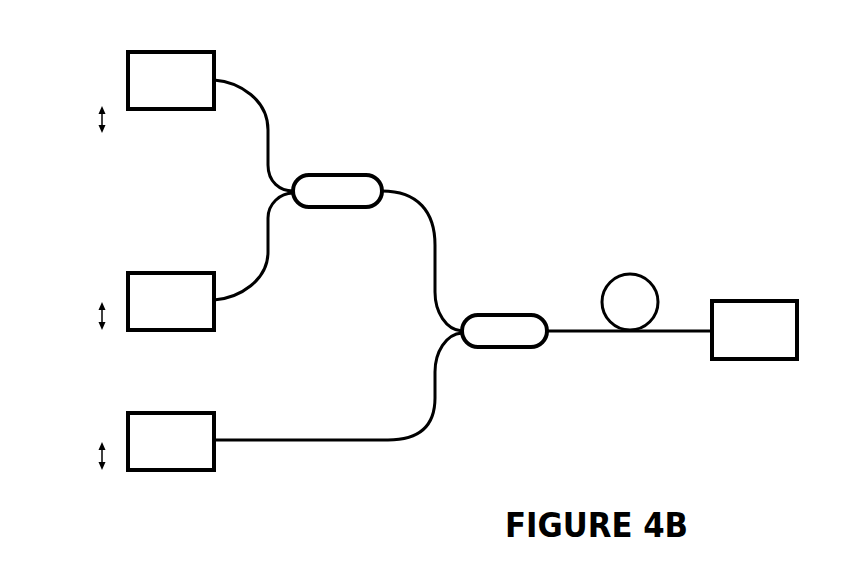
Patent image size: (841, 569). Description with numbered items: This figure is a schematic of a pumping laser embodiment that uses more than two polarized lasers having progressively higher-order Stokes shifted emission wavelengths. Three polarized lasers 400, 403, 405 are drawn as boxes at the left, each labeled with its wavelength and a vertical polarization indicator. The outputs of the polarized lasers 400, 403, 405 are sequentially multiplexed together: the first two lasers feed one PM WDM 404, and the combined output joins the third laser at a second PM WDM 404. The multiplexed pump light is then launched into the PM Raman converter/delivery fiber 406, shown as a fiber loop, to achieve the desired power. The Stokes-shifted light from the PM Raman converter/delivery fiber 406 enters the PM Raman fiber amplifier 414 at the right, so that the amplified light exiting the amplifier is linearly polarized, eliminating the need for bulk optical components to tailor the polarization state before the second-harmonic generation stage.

The polarized fiber laser 400 is at (243, 55).
The polarized laser 403 is at (245, 322).
The polarized laser 405 is at (240, 472).
The PM WDM 404 is at (366, 155).
The PM Raman converter/delivery fiber 406 is at (642, 248).
The PM Raman fiber amplifier 414 is at (772, 383).